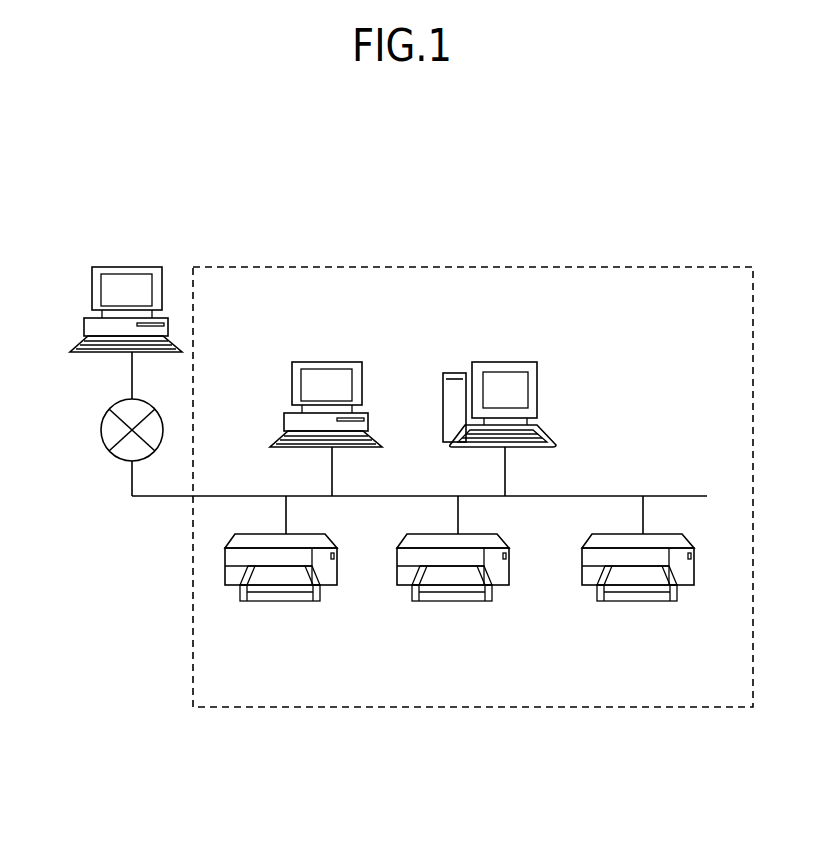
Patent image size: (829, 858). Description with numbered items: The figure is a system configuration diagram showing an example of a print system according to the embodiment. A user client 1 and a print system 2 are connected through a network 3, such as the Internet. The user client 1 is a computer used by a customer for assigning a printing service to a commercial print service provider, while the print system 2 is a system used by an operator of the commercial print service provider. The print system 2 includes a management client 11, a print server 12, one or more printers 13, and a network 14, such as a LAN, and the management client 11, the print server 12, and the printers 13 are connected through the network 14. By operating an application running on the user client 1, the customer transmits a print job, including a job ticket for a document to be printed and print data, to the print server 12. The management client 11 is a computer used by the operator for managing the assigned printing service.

The user client 1 is at (126, 267).
The print system 2 is at (617, 261).
The network 3 is at (101, 430).
The management client 11 is at (325, 362).
The print server 12 is at (508, 362).
The printer 13 is at (286, 603).
The network 14 is at (600, 495).